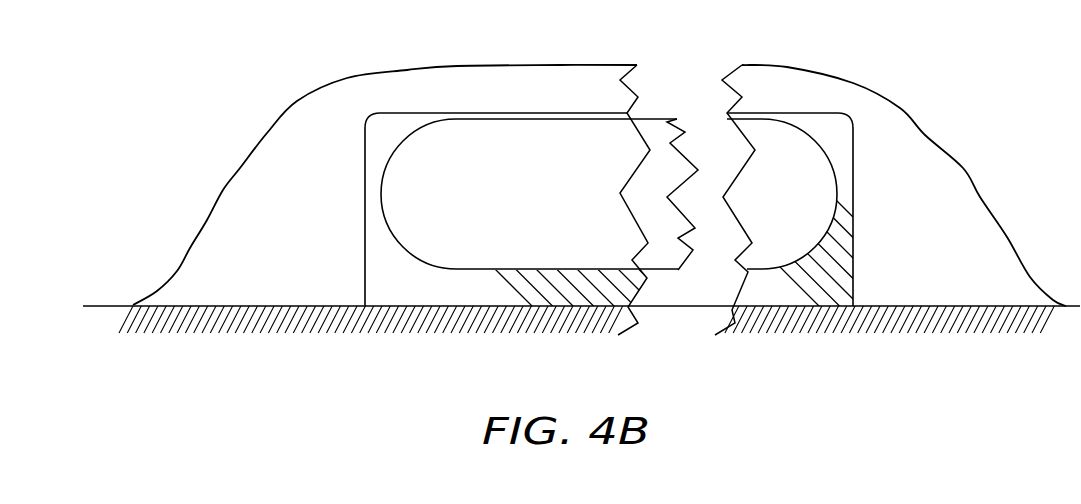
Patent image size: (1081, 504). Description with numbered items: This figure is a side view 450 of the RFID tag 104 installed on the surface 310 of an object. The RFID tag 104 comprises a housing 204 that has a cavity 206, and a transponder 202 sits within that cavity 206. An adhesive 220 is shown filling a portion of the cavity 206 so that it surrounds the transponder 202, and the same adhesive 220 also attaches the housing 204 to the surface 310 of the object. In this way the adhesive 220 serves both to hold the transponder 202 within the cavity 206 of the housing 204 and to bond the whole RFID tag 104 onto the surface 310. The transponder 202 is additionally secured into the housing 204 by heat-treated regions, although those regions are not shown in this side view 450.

The RFID tag 104 is at (267, 133).
The housing 204 is at (777, 88).
The cavity 206 is at (384, 141).
The transponder 202 is at (527, 204).
The adhesive 220 is at (213, 306).
The surface 310 is at (876, 316).
The side view 450 is at (993, 42).